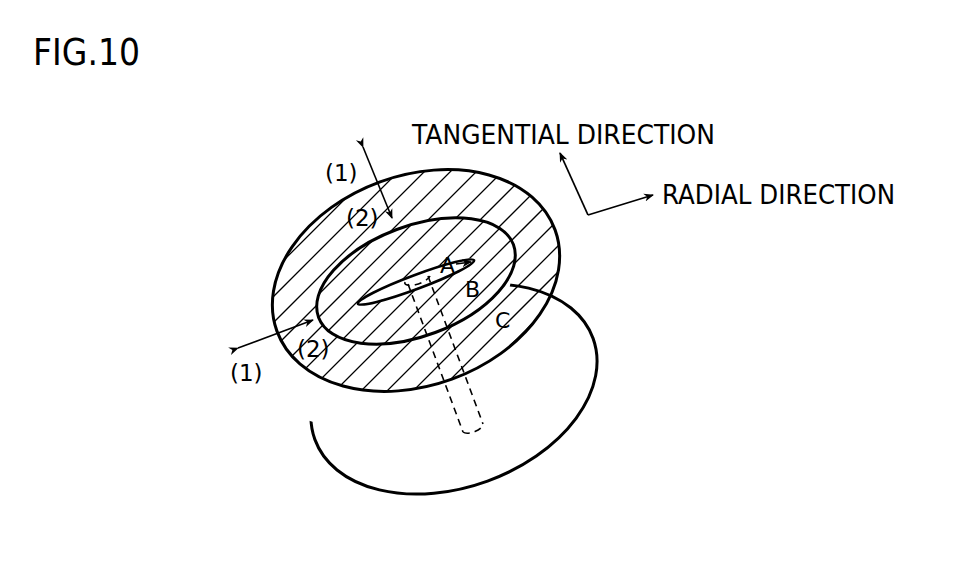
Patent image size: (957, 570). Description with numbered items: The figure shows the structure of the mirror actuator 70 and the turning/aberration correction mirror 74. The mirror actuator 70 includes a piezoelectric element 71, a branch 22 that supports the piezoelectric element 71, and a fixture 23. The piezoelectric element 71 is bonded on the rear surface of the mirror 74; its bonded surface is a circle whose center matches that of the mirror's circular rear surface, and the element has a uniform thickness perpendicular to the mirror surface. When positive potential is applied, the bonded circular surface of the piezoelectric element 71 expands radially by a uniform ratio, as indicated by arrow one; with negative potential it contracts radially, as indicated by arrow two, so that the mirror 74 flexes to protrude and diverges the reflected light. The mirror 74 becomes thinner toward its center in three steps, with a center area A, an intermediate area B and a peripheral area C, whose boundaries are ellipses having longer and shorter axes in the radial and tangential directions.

The mirror actuator 70 is at (218, 116).
The piezoelectric element 71 is at (553, 277).
The turning/aberration correction mirror 74 is at (538, 260).
The branch 22 is at (463, 395).
The fixture 23 is at (538, 458).